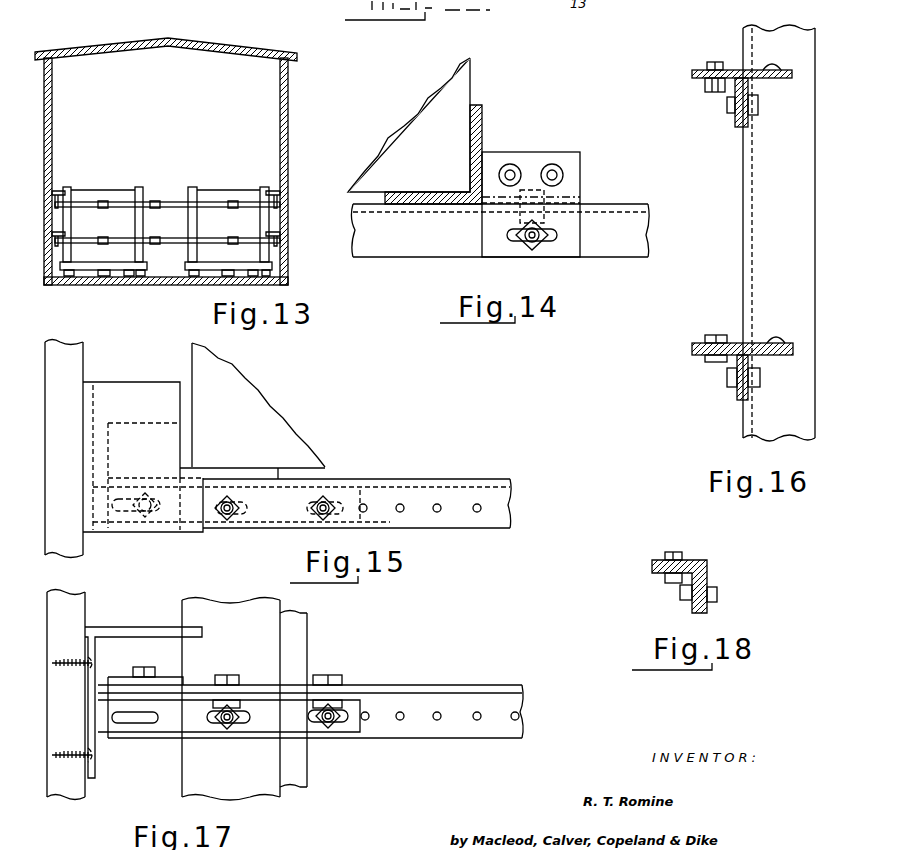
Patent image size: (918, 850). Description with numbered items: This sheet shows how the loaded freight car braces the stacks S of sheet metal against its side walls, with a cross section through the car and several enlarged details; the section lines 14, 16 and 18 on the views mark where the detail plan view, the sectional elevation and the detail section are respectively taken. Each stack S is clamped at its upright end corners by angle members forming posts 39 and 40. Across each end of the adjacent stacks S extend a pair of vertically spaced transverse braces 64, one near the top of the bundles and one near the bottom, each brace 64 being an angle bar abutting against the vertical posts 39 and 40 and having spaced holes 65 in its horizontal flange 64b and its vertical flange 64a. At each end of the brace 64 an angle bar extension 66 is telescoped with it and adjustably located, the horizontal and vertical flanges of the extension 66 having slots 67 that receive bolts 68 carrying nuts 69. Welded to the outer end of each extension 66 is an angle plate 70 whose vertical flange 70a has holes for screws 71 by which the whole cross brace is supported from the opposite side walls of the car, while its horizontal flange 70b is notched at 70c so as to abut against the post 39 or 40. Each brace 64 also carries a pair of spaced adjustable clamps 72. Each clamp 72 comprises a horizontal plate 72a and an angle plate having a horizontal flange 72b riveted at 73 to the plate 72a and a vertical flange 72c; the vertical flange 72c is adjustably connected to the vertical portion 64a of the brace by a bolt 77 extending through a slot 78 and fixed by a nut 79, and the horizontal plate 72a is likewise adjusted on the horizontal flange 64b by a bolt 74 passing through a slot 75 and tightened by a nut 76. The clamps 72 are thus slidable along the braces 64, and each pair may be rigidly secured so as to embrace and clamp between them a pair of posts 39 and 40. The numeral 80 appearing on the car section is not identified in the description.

In FIG. 13, the stack S is at (117, 188).
In FIG. 14, the stack S is at (430, 130).
In FIG. 13, the section line 14— 14 is at (170, 172).
In FIG. 13, the section line 16— 16 is at (155, 177).
In FIG. 17, the section line 18— 18 is at (352, 652).
In FIG. 14, the post 39 is at (482, 118).
In FIG. 16, the post 39 is at (768, 273).
In FIG. 15, the post 40 is at (190, 410).
In FIG. 17, the post 40 is at (192, 787).
In FIG. 13, the transverse brace 64 is at (102, 202).
In FIG. 14, the transverse brace 64 is at (643, 231).
In FIG. 16, the transverse brace 64 is at (735, 82).
In FIG. 15, the transverse brace 64 is at (513, 498).
In FIG. 17, the transverse brace 64 is at (457, 685).
In FIG. 18, the transverse brace 64 is at (709, 563).
In FIG. 16, the vertical flange 64a is at (736, 128).
In FIG. 17, the vertical flange 64a is at (422, 728).
In FIG. 16, the horizontal flange 64b is at (692, 79).
In FIG. 15, the horizontal flange 64b is at (474, 522).
In FIG. 17, the horizontal flange 64b is at (400, 683).
In FIG. 15, the holes 65 is at (437, 504).
In FIG. 17, the holes 65 is at (515, 710).
In FIG. 15, the angle bar extension 66 is at (363, 522).
In FIG. 17, the angle bar extension 66 is at (264, 728).
In FIG. 18, the angle bar extension 66 is at (689, 610).
In FIG. 15, the slots 67 is at (247, 512).
In FIG. 17, the slots 67 is at (142, 723).
In FIG. 15, the bolts 68 is at (227, 520).
In FIG. 17, the bolts 68 is at (236, 708).
In FIG. 18, the bolts 68 is at (681, 590).
In FIG. 17, the nuts 69 is at (214, 700).
In FIG. 18, the nuts 69 is at (668, 553).
In FIG. 13, the angle plate 70 is at (52, 193).
In FIG. 15, the angle plate 70 is at (98, 380).
In FIG. 17, the angle plate 70 is at (98, 625).
In FIG. 15, the vertical flange 70a is at (199, 535).
In FIG. 17, the vertical flange 70a is at (202, 635).
In FIG. 15, the horizontal flange 70b is at (130, 395).
In FIG. 17, the horizontal flange 70b is at (135, 628).
In FIG. 15, the notch 70c is at (182, 468).
In FIG. 17, the screws 71 is at (63, 658).
In FIG. 13, the adjustable clamp 72 is at (186, 238).
In FIG. 14, the adjustable clamp 72 is at (575, 151).
In FIG. 16, the adjustable clamp 72 is at (690, 64).
In FIG. 16, the horizontal plate 72a is at (728, 66).
In FIG. 16, the horizontal flange 72b is at (783, 79).
In FIG. 16, the vertical flange 72c is at (749, 120).
In FIG. 14, the rivets 73 is at (550, 165).
In FIG. 16, the rivets 73 is at (764, 66).
In FIG. 14, the bolt 74 is at (520, 243).
In FIG. 16, the bolt 74 is at (706, 91).
In FIG. 14, the slot 75 is at (548, 237).
In FIG. 14, the nut 76 is at (533, 248).
In FIG. 16, the nut 76 is at (706, 60).
In FIG. 14, the bolt 77 is at (500, 188).
In FIG. 14, the slot 78 is at (557, 198).
In FIG. 14, the nut 79 is at (520, 223).
In FIG. 13, the rack cross member 80 is at (103, 238).